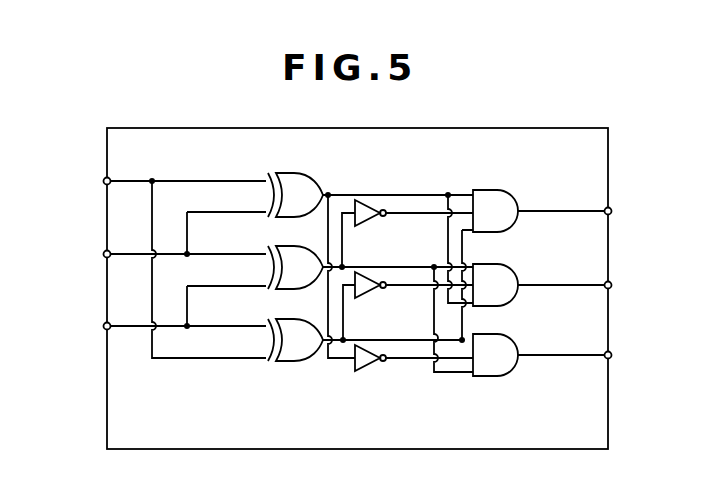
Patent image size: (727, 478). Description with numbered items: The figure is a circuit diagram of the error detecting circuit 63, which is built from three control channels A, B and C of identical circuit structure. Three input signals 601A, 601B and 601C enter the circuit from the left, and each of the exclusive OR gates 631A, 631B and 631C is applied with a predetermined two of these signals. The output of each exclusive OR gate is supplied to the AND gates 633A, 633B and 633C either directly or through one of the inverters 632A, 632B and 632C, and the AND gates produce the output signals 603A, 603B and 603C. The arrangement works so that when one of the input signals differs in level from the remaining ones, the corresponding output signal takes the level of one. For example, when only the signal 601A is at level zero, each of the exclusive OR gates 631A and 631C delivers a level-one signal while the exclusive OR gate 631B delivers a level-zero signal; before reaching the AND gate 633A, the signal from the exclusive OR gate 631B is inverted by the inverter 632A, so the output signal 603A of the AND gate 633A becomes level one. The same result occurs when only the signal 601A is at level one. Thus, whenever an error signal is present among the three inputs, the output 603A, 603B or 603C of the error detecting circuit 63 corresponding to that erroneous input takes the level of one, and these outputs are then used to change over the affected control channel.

The error detecting circuit 63 is at (460, 437).
The signal 601A is at (104, 181).
The signal 601B is at (104, 254).
The signal 601C is at (104, 326).
The exclusive OR gate 631A is at (293, 174).
The exclusive OR gate 631B is at (293, 247).
The exclusive OR gate 631C is at (293, 320).
The inverter 632A is at (392, 184).
The inverter 632B is at (374, 292).
The inverter 632C is at (373, 365).
The AND gate 633A is at (545, 187).
The AND gate 633B is at (545, 267).
The AND gate 633C is at (545, 342).
The output signal 603A is at (611, 211).
The output signal 603B is at (611, 285).
The output signal 603C is at (611, 355).